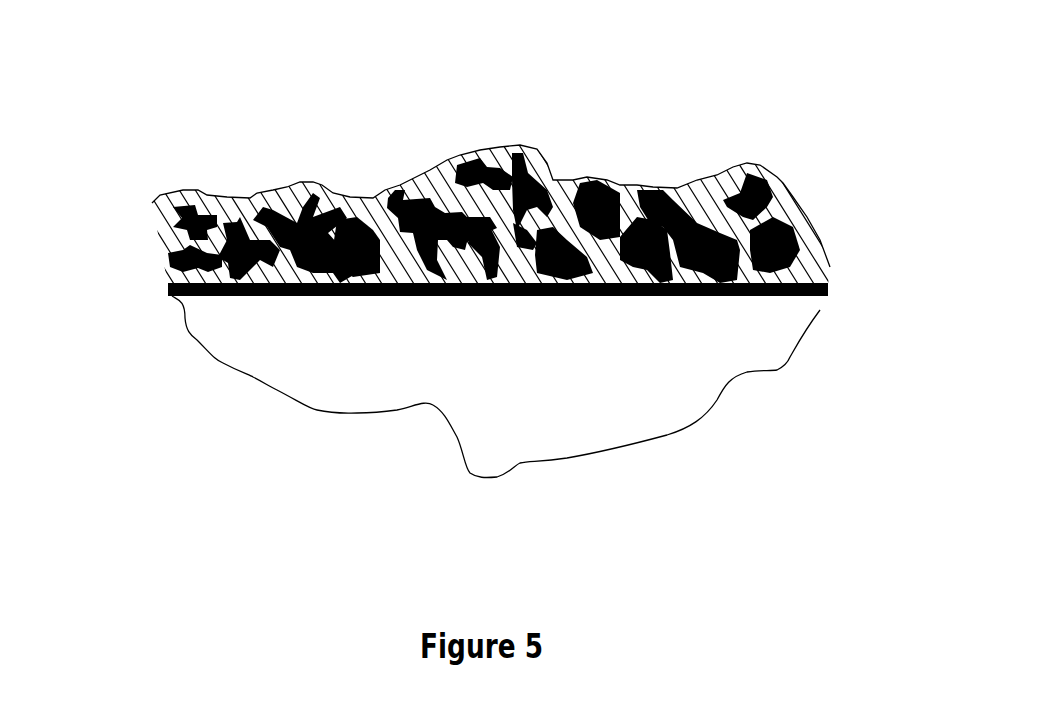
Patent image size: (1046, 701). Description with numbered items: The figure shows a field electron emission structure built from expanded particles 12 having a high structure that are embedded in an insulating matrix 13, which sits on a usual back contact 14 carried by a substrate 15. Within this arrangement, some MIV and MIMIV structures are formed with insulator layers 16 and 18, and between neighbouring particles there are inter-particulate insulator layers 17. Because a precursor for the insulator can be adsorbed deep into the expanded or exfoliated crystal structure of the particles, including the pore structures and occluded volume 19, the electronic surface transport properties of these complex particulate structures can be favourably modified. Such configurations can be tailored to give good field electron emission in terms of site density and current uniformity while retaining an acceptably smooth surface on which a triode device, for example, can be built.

The expanded particles 12 is at (337, 227).
The insulating matrix 13 is at (477, 157).
The back contact 14 is at (173, 290).
The substrate 15 is at (417, 368).
The insulator layer 16 is at (783, 277).
The inter-particulate insulator layers 17 is at (810, 235).
The insulator layer 18 is at (747, 163).
The pore structures and occluded volume 19 is at (552, 193).